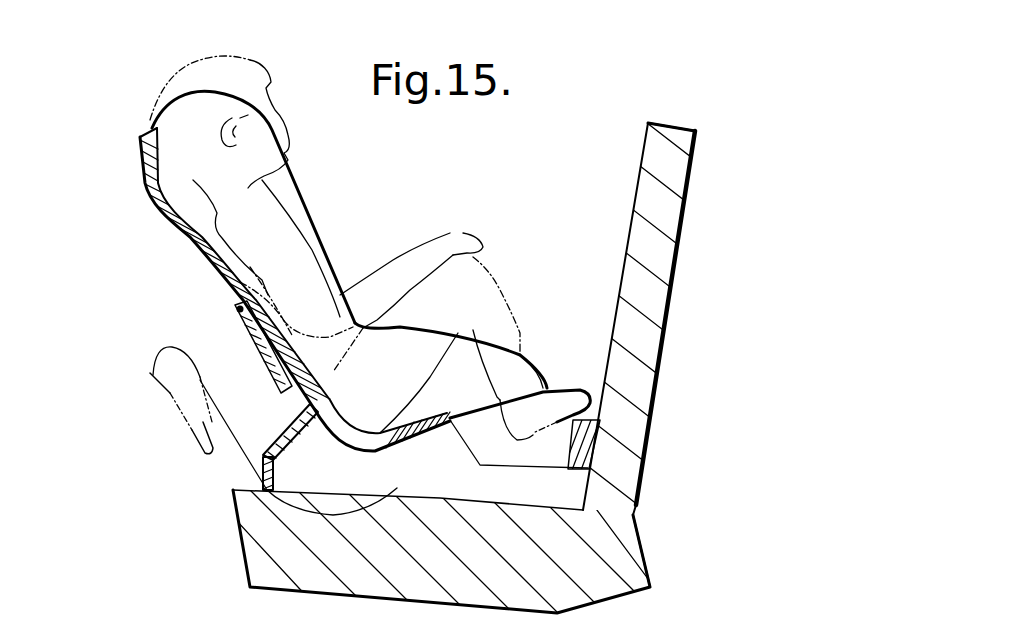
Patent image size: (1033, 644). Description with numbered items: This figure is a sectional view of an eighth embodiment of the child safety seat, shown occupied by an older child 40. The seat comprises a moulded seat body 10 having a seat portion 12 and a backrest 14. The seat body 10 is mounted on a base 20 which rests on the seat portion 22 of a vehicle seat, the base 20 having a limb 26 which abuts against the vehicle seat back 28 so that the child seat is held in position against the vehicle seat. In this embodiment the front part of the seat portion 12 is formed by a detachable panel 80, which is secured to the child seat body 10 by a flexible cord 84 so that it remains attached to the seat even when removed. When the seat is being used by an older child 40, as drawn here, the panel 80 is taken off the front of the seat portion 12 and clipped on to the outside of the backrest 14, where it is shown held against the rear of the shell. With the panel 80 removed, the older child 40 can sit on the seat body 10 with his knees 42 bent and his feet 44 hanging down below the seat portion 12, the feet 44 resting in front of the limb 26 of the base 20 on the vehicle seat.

The seat body 10 is at (122, 178).
The seat portion 12 is at (420, 433).
The backrest 14 is at (203, 253).
The base 20 is at (262, 460).
The seat portion of vehicle seat 22 is at (262, 536).
The limb 26 is at (590, 437).
The vehicle seat back 28 is at (663, 236).
The older child 40 is at (307, 243).
The knees 42 is at (480, 270).
The feet 44 is at (570, 390).
The detachable panel 80 is at (247, 327).
The flexible cord 84 is at (443, 440).